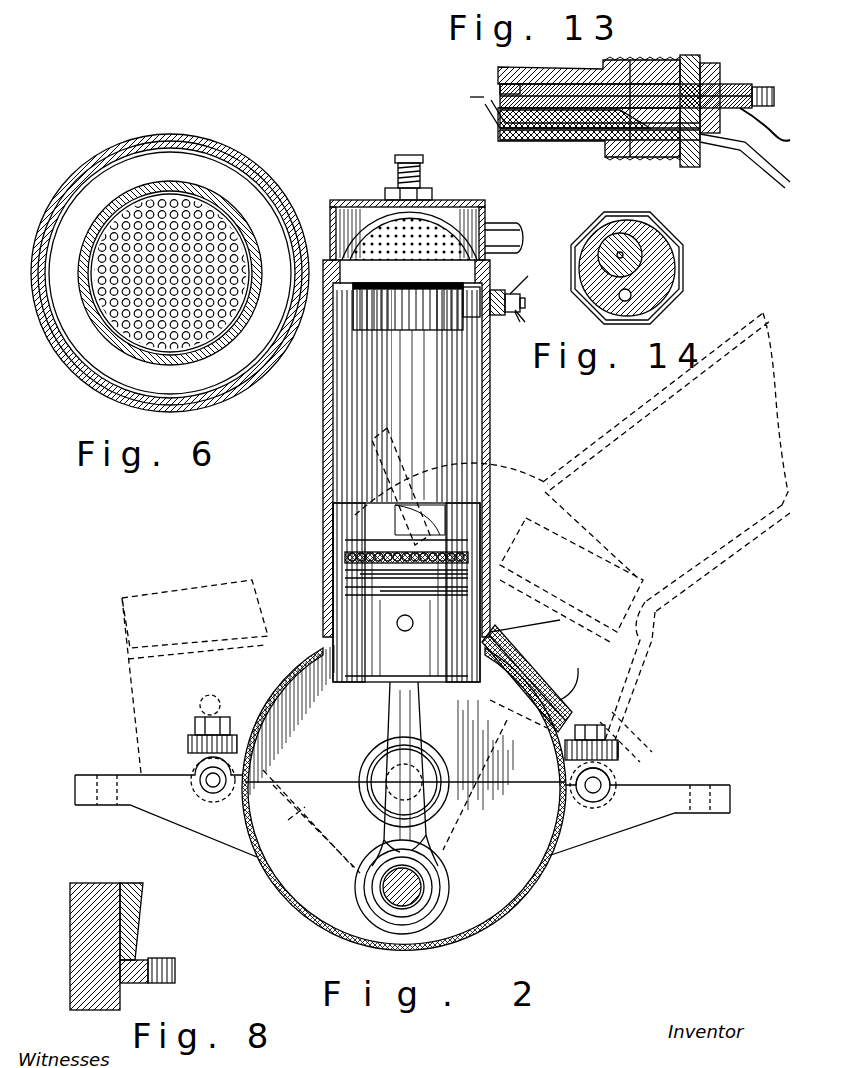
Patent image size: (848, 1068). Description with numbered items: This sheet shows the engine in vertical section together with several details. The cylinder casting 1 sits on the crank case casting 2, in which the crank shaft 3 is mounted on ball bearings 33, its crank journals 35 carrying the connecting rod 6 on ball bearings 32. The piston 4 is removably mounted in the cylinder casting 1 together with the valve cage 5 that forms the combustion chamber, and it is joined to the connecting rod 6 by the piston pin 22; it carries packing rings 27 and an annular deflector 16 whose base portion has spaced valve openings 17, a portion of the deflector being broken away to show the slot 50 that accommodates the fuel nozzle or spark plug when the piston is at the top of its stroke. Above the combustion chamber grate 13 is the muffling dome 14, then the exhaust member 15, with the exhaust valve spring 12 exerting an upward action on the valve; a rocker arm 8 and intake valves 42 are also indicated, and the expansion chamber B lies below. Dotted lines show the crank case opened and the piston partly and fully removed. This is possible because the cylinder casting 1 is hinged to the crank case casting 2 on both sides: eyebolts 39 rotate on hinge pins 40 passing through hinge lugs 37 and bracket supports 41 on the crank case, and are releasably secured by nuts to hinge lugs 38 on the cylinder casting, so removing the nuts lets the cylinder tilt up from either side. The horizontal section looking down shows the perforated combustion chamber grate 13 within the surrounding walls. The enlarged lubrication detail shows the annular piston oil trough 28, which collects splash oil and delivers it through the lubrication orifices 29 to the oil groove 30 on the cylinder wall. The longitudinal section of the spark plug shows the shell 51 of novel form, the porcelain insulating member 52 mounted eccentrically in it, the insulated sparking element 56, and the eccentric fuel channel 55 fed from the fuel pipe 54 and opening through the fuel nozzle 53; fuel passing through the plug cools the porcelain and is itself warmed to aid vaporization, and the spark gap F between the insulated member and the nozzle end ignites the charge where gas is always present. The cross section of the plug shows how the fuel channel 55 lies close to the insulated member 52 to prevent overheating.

In FIG. 6, the cylinder casting 1 is at (60, 194).
In FIG. 8, the cylinder casting 1 is at (80, 936).
In FIG. 2, the cylinder casting 1 is at (323, 476).
In FIG. 2, the crank case casting 2 is at (302, 918).
In FIG. 2, the crank shaft 3 is at (322, 438).
In FIG. 2, the piston 4 is at (132, 716).
In FIG. 6, the valve cage 5 is at (142, 183).
In FIG. 2, the valve cage 5 is at (414, 326).
In FIG. 6, the connecting rod 6 is at (326, 318).
In FIG. 2, the connecting rod 6 is at (324, 325).
In FIG. 2, the rocker arm 8 is at (513, 326).
In FIG. 2, the exhaust valve spring 12 is at (424, 170).
In FIG. 6, the combustion chamber grate 13 is at (144, 344).
In FIG. 13, the muffling dome 14 is at (630, 56).
In FIG. 2, the muffling dome 14 is at (384, 208).
In FIG. 2, the exhaust member 15 is at (500, 224).
In FIG. 2, the annular deflector 16 is at (346, 510).
In FIG. 2, the valve openings 17 is at (346, 556).
In FIG. 2, the piston pin 22 is at (400, 630).
In FIG. 2, the packing rings 27 is at (346, 575).
In FIG. 8, the annular piston oil trough 28 is at (142, 968).
In FIG. 8, the lubrication orifices 29 is at (131, 982).
In FIG. 2, the lubrication orifices 29 is at (356, 690).
In FIG. 8, the oil groove 30 is at (125, 962).
In FIG. 2, the oil groove 30 is at (428, 684).
In FIG. 2, the ball bearings 32 is at (440, 878).
In FIG. 2, the ball bearings for the crank shaft 33 is at (378, 765).
In FIG. 2, the crank journals 35 is at (428, 893).
In FIG. 2, the hinge lugs 37 is at (615, 778).
In FIG. 2, the hinge lugs 38 is at (188, 745).
In FIG. 2, the eye bolt 39 is at (200, 786).
In FIG. 2, the hinge pin 40 is at (213, 788).
In FIG. 2, the bracket support 41 is at (180, 815).
In FIG. 2, the intake valves 42 is at (536, 676).
In FIG. 2, the slot 50 is at (482, 516).
In FIG. 13, the fuel nozzle and spark plug shell 51 is at (710, 66).
In FIG. 14, the fuel nozzle and spark plug shell 51 is at (668, 268).
In FIG. 2, the fuel nozzle and spark plug shell 51 is at (494, 284).
In FIG. 13, the porcelain insulating member 52 is at (735, 86).
In FIG. 14, the porcelain insulating member 52 is at (640, 248).
In FIG. 13, the fuel nozzle 53 is at (486, 114).
In FIG. 13, the fuel pipe 54 is at (744, 160).
In FIG. 13, the fuel channel 55 is at (556, 130).
In FIG. 14, the fuel channel 55 is at (628, 296).
In FIG. 13, the sparking element 56 is at (500, 88).
In FIG. 14, the sparking element 56 is at (622, 256).
In FIG. 6, the expansion chamber B is at (238, 184).
In FIG. 13, the spark gap F is at (470, 97).